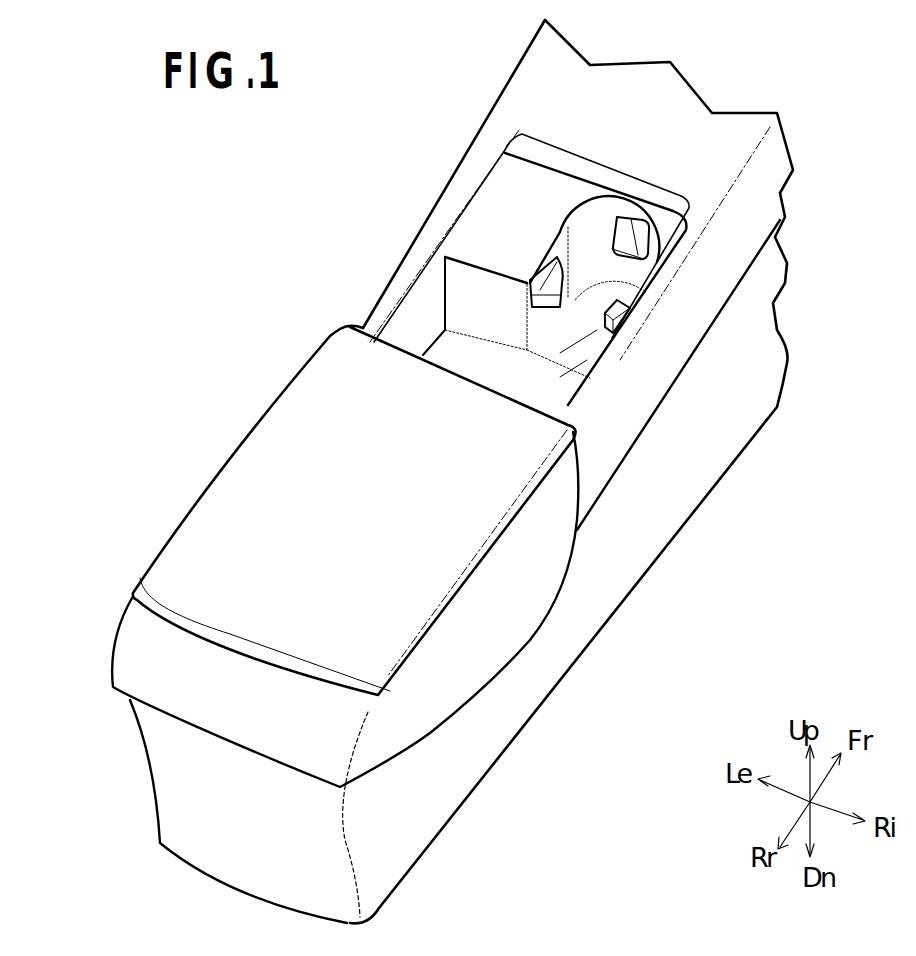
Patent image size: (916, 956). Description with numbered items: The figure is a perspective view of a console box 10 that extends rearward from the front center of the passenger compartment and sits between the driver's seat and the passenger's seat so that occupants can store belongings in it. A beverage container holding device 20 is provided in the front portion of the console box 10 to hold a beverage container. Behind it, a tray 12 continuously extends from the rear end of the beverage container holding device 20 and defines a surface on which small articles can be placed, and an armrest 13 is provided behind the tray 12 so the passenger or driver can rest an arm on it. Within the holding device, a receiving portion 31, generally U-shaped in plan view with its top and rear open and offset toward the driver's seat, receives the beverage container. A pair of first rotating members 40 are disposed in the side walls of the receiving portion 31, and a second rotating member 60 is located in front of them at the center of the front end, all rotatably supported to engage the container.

The console box 10 is at (324, 129).
The tray 12 is at (453, 362).
The armrest 13 is at (322, 409).
The beverage container holding device 20 is at (490, 228).
The receiving portion 31 is at (594, 249).
The first rotating members 40 is at (543, 308).
The second rotating member 60 is at (633, 217).